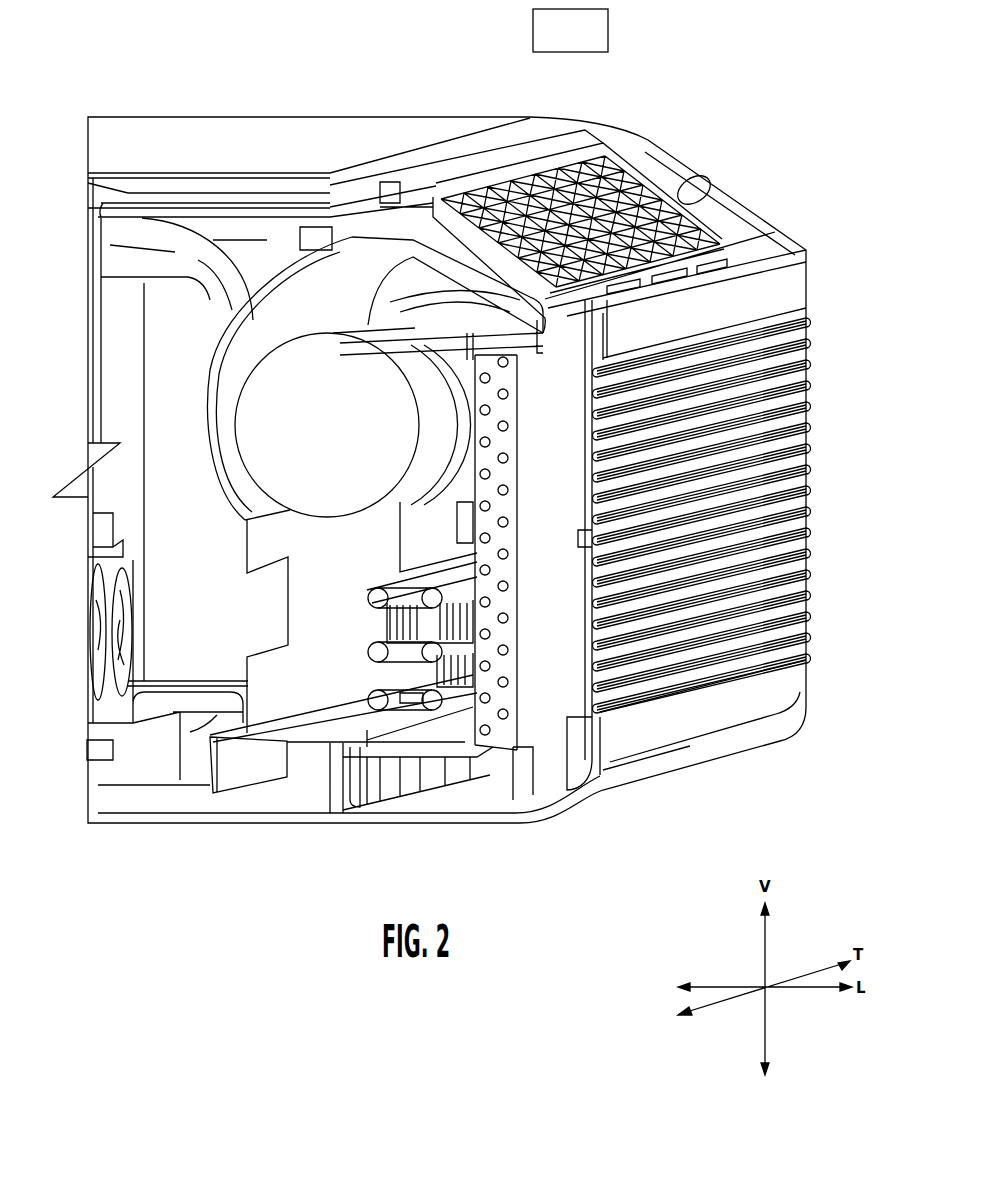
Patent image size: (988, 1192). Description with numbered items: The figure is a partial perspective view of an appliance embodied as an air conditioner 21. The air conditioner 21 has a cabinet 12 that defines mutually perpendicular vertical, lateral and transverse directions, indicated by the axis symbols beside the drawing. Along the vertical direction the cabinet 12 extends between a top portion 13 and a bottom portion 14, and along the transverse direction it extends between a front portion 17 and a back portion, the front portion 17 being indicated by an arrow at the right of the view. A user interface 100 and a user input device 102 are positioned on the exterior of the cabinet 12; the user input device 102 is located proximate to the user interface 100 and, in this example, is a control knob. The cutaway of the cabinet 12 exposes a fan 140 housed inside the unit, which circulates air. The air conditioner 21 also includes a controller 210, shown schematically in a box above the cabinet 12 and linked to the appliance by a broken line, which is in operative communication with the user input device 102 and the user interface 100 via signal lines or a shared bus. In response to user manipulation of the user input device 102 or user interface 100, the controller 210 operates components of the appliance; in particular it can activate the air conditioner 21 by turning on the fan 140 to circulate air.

The top portion 13 is at (100, 100).
The cabinet 12 is at (218, 145).
The air conditioner 21 is at (282, 145).
The fan 140 is at (352, 405).
The controller 210 is at (570, 118).
The user input device 102 is at (697, 188).
The user interface 100 is at (735, 212).
The front portion 17 is at (822, 687).
The bottom portion 14 is at (211, 826).